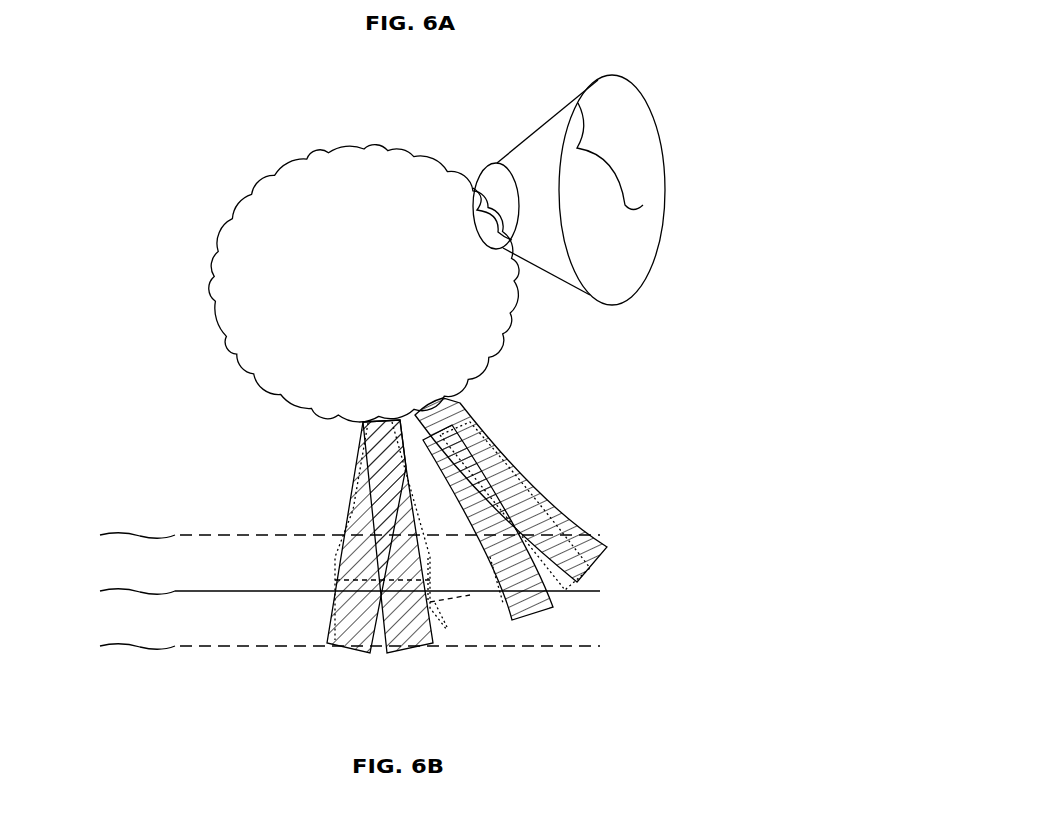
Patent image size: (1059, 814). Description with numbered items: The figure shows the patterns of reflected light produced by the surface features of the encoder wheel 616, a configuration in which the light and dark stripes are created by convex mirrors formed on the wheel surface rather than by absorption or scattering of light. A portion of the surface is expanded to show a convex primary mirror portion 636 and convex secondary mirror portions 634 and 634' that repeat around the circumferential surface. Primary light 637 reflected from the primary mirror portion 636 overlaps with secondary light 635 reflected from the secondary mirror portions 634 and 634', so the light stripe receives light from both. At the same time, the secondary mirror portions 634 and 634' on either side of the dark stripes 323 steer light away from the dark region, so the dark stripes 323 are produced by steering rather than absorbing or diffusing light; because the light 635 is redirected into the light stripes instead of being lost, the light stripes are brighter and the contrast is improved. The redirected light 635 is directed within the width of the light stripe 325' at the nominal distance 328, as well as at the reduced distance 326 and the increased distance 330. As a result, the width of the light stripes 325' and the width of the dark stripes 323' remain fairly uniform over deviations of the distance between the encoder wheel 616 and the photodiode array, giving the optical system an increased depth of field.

The encoder wheel 616 is at (265, 217).
The convex secondary mirror portion 634 is at (581, 154).
The convex primary mirror portion 636 is at (608, 167).
The convex secondary mirror portion 634' is at (683, 245).
The secondary light 635 is at (392, 454).
The primary light 637 is at (353, 495).
The dark stripes 323 is at (517, 509).
The width of the dark stripes 323' is at (484, 626).
The width of the light stripe 325' is at (330, 531).
The reduced distance 326 is at (316, 536).
The nominal distance 328 is at (316, 592).
The increased distance 330 is at (316, 647).